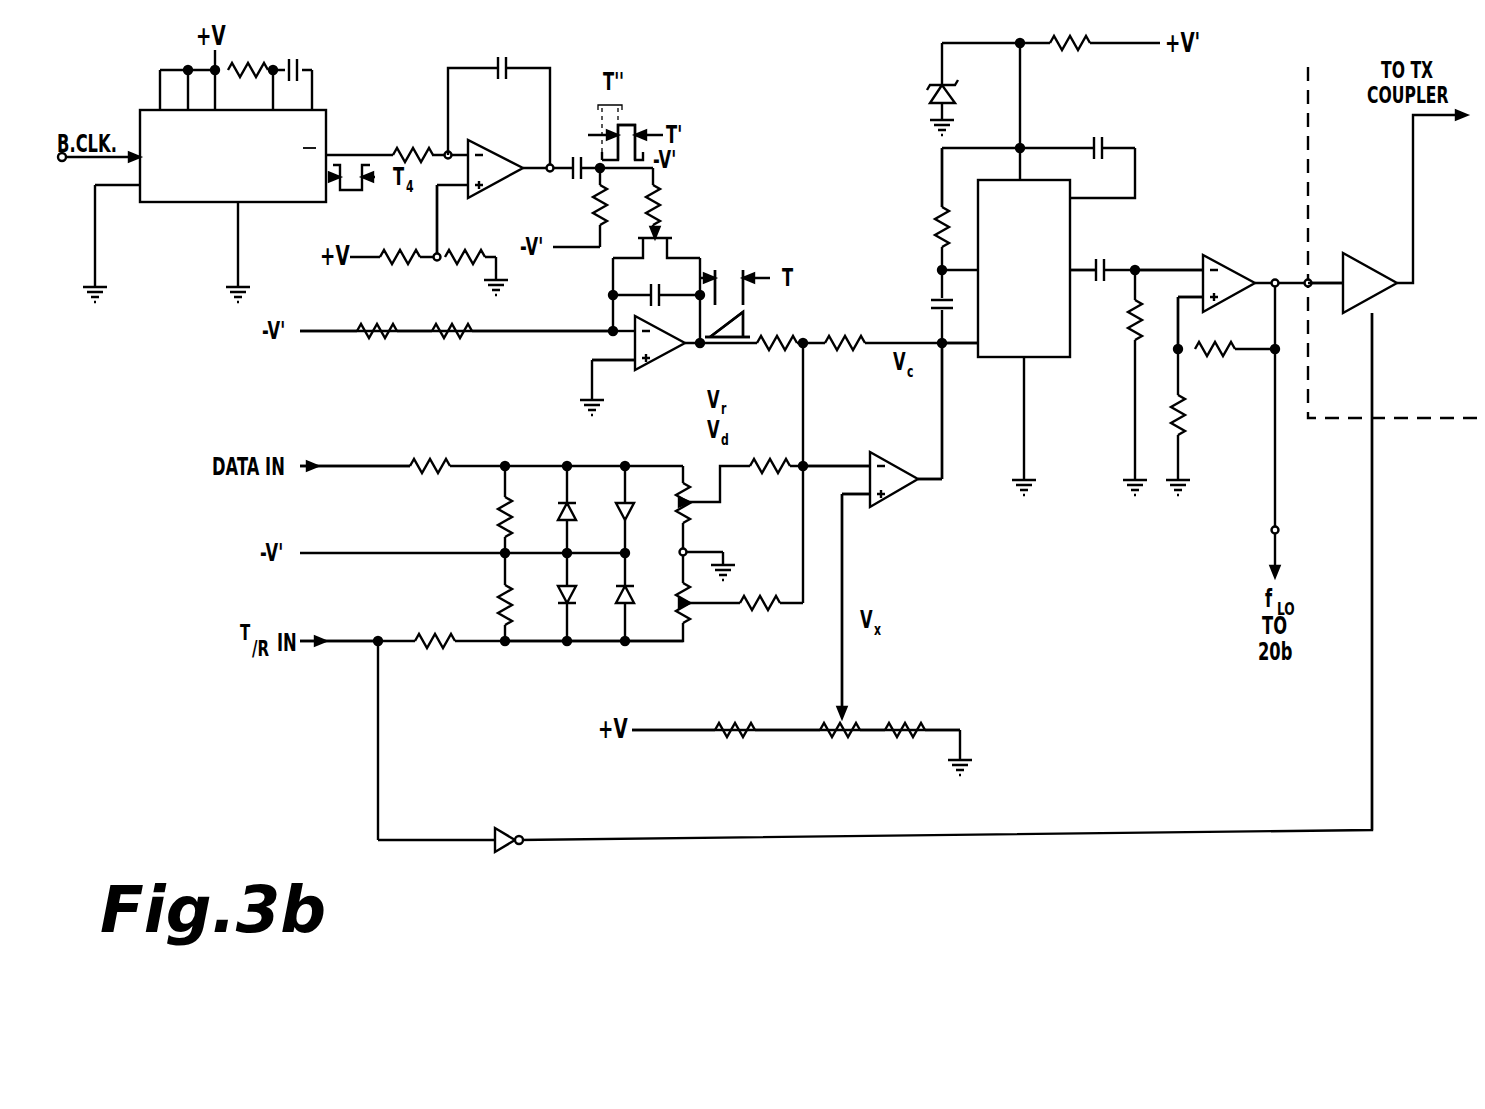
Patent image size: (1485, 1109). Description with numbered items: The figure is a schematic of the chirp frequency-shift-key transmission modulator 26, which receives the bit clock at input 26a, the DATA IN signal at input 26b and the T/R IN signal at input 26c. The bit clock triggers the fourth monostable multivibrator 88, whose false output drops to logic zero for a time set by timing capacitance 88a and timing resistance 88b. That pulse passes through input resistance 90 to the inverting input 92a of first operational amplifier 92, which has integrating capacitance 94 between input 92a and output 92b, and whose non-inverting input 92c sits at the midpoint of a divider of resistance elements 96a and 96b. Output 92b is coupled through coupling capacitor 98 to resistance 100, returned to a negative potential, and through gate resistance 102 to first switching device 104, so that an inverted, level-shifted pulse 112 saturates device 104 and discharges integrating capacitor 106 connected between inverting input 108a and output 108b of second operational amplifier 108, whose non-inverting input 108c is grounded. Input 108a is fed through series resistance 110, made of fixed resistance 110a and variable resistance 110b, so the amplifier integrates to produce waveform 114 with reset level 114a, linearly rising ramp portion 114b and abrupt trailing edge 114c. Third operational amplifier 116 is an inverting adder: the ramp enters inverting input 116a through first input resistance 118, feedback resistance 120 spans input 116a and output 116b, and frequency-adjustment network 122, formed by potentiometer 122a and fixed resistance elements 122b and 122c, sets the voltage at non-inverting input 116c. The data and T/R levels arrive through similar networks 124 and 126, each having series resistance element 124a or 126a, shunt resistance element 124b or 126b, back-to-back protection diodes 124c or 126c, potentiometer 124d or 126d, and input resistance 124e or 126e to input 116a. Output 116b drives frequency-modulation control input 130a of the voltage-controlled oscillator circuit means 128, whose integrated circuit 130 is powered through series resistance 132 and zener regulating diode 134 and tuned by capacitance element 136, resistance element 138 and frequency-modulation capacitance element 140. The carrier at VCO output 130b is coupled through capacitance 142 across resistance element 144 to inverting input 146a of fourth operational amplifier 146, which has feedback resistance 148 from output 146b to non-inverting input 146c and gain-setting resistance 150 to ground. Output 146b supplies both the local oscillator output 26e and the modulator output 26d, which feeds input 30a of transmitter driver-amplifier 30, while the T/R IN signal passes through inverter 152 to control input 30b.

The chirp frequency-shift-key transmission modulator 26 is at (1267, 772).
The bit clock input 26a is at (66, 161).
The data input 26b is at (320, 470).
The transmit-receive input 26c is at (330, 648).
The chirped frequency-shift-key modulator output 26d is at (1308, 278).
The local oscillator output 26e is at (1280, 530).
The transmitter driver-amplifier 30 is at (1370, 263).
The driver-amplifier input 30a is at (1325, 280).
The driver-amplifier control input 30b is at (1374, 328).
The fourth monostable multivibrator 88 is at (233, 134).
The timing capacitance 88a is at (299, 60).
The timing resistance 88b is at (245, 66).
The input resistance 90 is at (410, 150).
The first operational amplifier 92 is at (500, 178).
The inverting input 92a is at (447, 150).
The first operational amplifier output 92b is at (548, 163).
The non-inverting input 92c is at (437, 212).
The integrating capacitance 94 is at (500, 62).
The resistance element 96a is at (400, 263).
The resistance element 96b is at (466, 263).
The coupling capacitor 98 is at (574, 177).
The resistance 100 is at (596, 212).
The gate resistance 102 is at (657, 205).
The first switching device 104 is at (665, 245).
The integrating capacitor 106 is at (655, 288).
The second operational amplifier 108 is at (662, 365).
The inverting input 108a is at (610, 338).
The second operational amplifier output 108b is at (705, 350).
The non-inverting input 108c is at (592, 378).
The series resistance 110 is at (408, 363).
The fixed resistance 110a is at (372, 338).
The variable resistance 110b is at (452, 338).
The pulse 112 is at (628, 122).
The ramp voltage waveform 114 is at (745, 315).
The D.C. reset level 114a is at (730, 330).
The linearly rising ramp portion 114b is at (730, 302).
The trailing edge 114c is at (735, 322).
The third operational amplifier 116 is at (903, 500).
The inverting input 116a is at (833, 463).
The third operational amplifier output 116b is at (945, 438).
The non-inverting input 116c is at (845, 546).
The first input resistance 118 is at (777, 352).
The feedback resistance 120 is at (848, 348).
The frequency-adjustment network 122 is at (805, 760).
The potentiometer 122a is at (845, 738).
The fixed resistance element 122b is at (738, 720).
The fixed resistance element 122c is at (905, 720).
The data input network 124 is at (245, 494).
The series resistance element 124a is at (425, 462).
The shunt resistance element 124b is at (502, 520).
The back-to-back protection diodes 124c is at (620, 508).
The potentiometer 124d is at (692, 512).
The input resistance 124e is at (772, 470).
The T/R input network 126 is at (265, 681).
The series resistance element 126a is at (435, 648).
The shunt resistance element 126b is at (502, 605).
The back-to-back protection diodes 126c is at (622, 600).
The potentiometer 126d is at (690, 625).
The input resistance 126e is at (760, 598).
The voltage-controlled oscillator circuit means 128 is at (888, 137).
The voltage-controlled oscillator integrated circuit 130 is at (990, 178).
The frequency-modulation control input 130a is at (962, 348).
The VCO output 130b is at (1072, 280).
The series resistance 132 is at (1070, 50).
The zener regulating diode 134 is at (934, 82).
The center-frequency-determining capacitance element 136 is at (1100, 140).
The center-frequency-determining resistance element 138 is at (936, 235).
The frequency-modulation capacitance element 140 is at (934, 302).
The coupling capacitance 142 is at (1100, 258).
The resistance element 144 is at (1130, 335).
The fourth operational amplifier 146 is at (1226, 265).
The inverting input 146a is at (1172, 265).
The fourth operational amplifier output 146b is at (1274, 280).
The non-inverting input 146c is at (1176, 318).
The feedback resistance 148 is at (1215, 352).
The gain-setting resistance 150 is at (1182, 415).
The inverter 152 is at (500, 850).